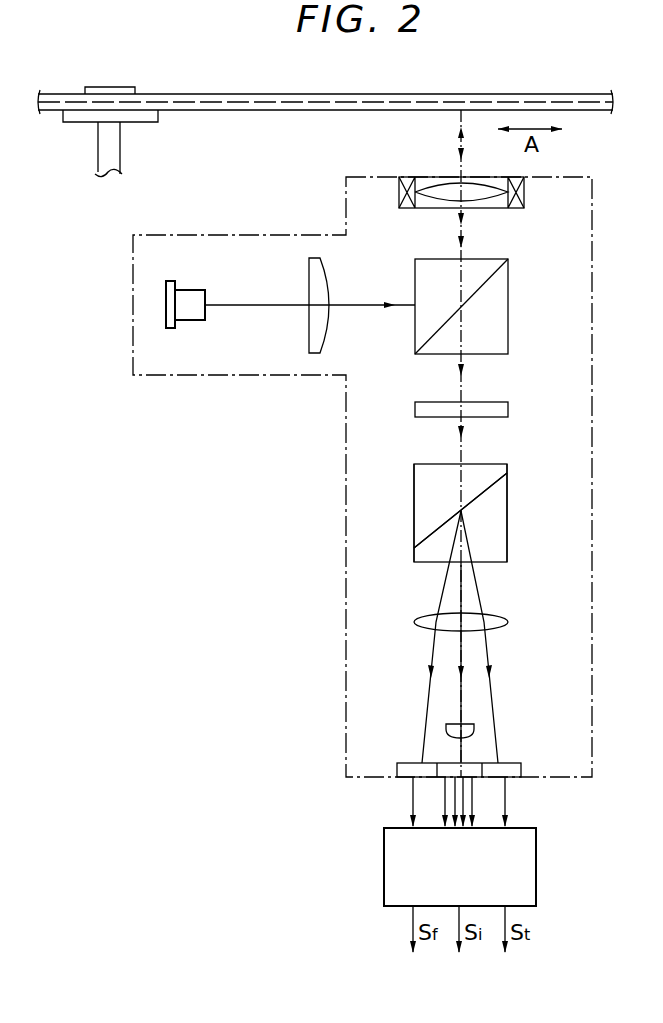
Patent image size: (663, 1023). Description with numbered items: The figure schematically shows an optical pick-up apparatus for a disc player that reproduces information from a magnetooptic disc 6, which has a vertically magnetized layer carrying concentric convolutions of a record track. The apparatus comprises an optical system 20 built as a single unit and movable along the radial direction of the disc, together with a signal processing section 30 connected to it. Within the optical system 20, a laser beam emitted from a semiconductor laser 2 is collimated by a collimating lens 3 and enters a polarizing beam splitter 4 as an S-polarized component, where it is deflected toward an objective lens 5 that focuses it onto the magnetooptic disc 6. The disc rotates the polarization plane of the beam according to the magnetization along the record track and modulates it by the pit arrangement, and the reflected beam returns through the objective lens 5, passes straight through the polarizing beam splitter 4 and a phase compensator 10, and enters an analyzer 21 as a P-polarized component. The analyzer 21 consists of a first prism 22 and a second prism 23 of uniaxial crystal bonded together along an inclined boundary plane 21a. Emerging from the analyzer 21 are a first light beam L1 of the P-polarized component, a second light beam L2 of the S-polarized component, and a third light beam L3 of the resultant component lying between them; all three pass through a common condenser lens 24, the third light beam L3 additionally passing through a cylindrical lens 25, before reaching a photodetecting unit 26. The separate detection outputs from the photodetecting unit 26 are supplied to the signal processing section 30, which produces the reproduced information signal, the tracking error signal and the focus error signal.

The semiconductor laser 2 is at (196, 290).
The collimating lens 3 is at (333, 290).
The polarizing beam splitter 4 is at (509, 304).
The objective lens 5 is at (480, 206).
The magnetooptic disc 6 is at (406, 94).
The phase compensator 10 is at (509, 408).
The optical system 20 is at (346, 664).
The analyzer 21 is at (407, 470).
The boundary plane 21a is at (461, 511).
The first prism 22 is at (414, 518).
The second prism 23 is at (507, 513).
The condenser lens 24 is at (508, 620).
The cylindrical lens 25 is at (468, 722).
The photodetecting unit 26 is at (517, 762).
The signal processing section 30 is at (537, 866).
The first light beam L1 is at (482, 597).
The second light beam L2 is at (444, 585).
The third light beam L3 is at (455, 600).